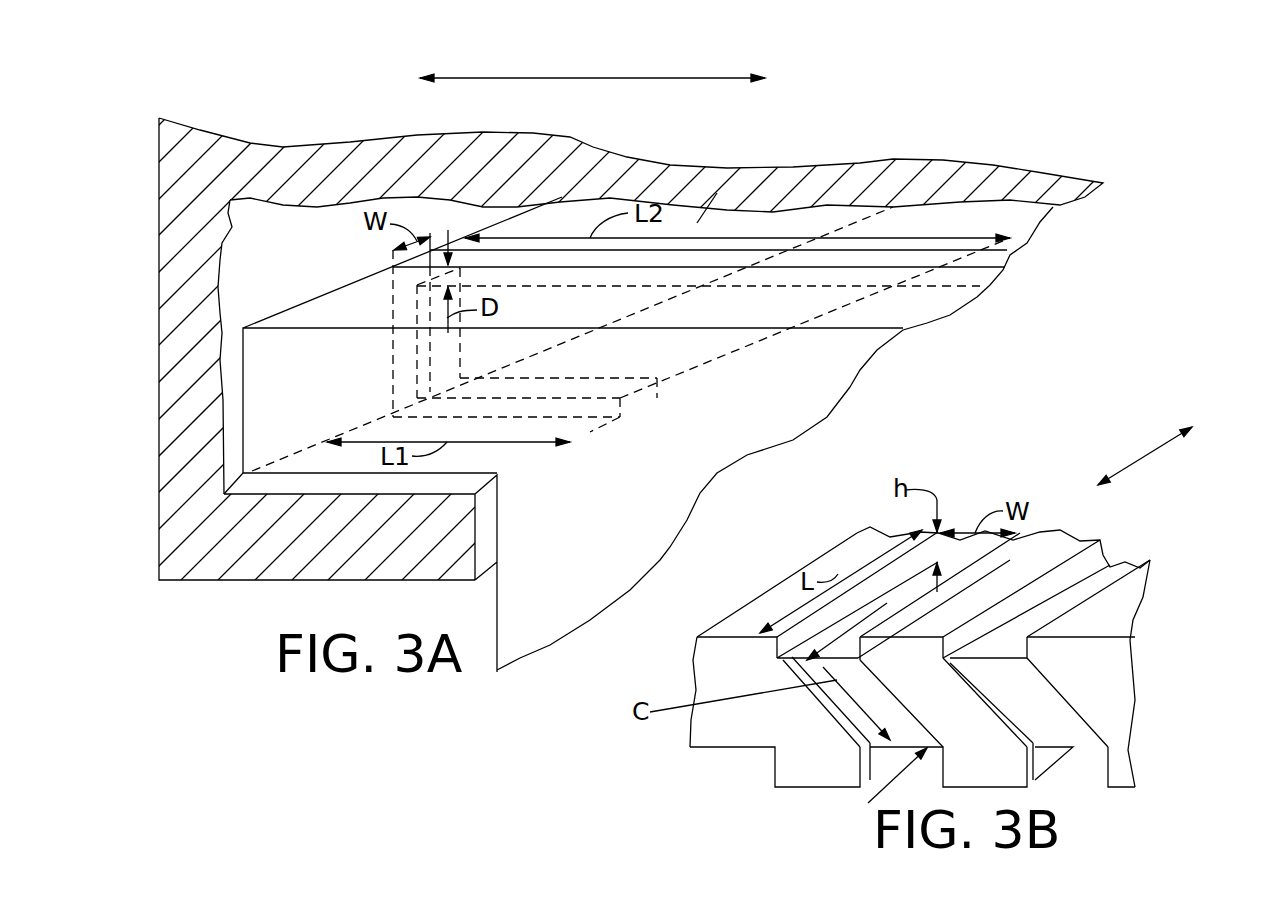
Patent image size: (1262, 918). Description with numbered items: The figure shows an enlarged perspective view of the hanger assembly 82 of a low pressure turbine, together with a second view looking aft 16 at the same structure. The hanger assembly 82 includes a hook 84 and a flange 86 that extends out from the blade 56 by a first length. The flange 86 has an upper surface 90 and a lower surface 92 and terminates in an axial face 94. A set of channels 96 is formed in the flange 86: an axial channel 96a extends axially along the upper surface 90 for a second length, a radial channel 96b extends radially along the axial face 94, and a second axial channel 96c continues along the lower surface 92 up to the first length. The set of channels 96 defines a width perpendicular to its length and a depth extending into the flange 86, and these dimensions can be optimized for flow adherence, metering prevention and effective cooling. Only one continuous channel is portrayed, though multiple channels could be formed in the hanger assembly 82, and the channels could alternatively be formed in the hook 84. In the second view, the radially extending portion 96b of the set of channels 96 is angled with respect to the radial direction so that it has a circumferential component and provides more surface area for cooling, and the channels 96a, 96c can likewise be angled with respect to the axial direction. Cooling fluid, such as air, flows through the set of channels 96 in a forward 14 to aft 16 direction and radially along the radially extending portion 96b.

In FIG. 3A, the hanger assembly 82 is at (271, 69).
In FIG. 3A, the hook 84 is at (263, 547).
In FIG. 3A, the flange 86 is at (310, 310).
In FIG. 3B, the flange 86 is at (1057, 550).
In FIG. 3A, the upper surface 90 is at (747, 172).
In FIG. 3B, the upper surface 90 is at (988, 607).
In FIG. 3A, the lower surface 92 is at (280, 477).
In FIG. 3A, the axial face 94 is at (245, 412).
In FIG. 3A, the set of channels 96 is at (843, 260).
In FIG. 3B, the set of channels 96 is at (1045, 617).
In FIG. 3A, the axial channel 96a is at (757, 262).
In FIG. 3B, the axial channel 96a is at (1107, 578).
In FIG. 3A, the radial channel 96b is at (410, 303).
In FIG. 3B, the radial channel 96b is at (1027, 713).
In FIG. 3A, the second axial channel 96c is at (600, 378).
In FIG. 3B, the second axial channel 96c is at (1087, 763).
In FIG. 3A, the blade 56 is at (618, 512).
In FIG. 3A, the forward direction 14 is at (575, 79).
In FIG. 3B, the forward direction 14 is at (1130, 465).
In FIG. 3A, the aft direction 16 is at (779, 79).
In FIG. 3B, the aft direction 16 is at (1208, 415).